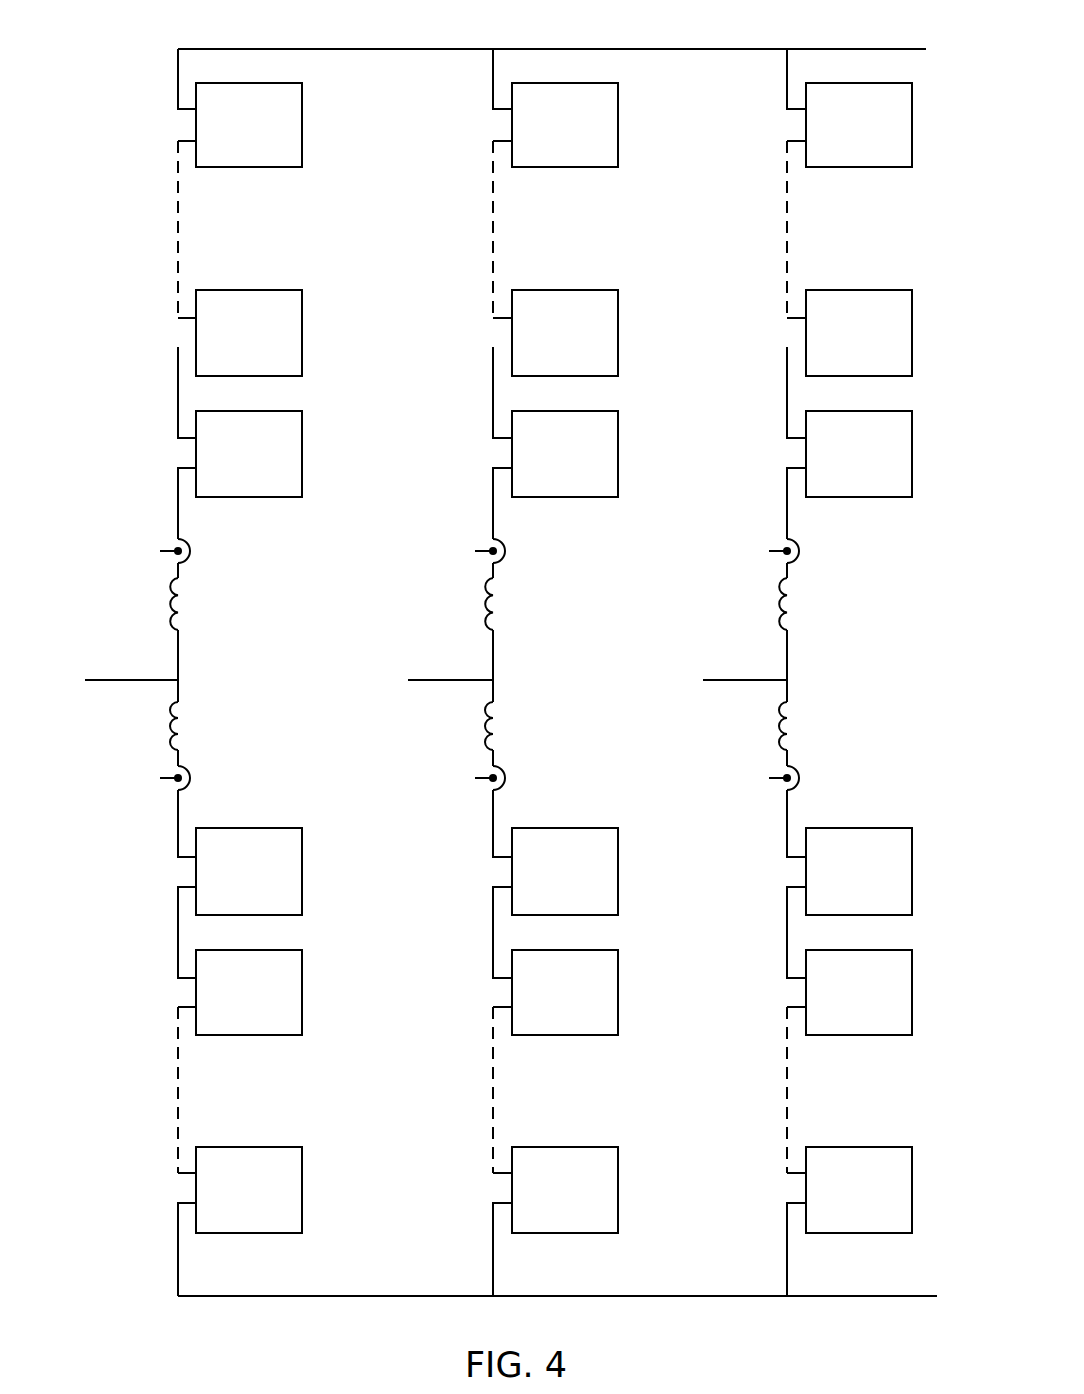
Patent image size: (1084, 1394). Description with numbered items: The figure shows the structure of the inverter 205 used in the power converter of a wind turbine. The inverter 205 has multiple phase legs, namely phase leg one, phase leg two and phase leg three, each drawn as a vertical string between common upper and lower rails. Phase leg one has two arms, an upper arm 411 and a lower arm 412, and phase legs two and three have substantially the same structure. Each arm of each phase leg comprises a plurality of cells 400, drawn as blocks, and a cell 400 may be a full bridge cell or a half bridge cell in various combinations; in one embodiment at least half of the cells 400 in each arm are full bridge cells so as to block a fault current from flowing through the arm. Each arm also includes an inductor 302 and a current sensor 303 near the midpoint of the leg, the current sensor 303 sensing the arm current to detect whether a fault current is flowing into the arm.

The inverter 205 is at (123, 82).
The cell 400 is at (249, 125).
The upper arm 411 is at (191, 294).
The lower arm 412 is at (190, 1043).
The inductor 302 is at (230, 612).
The current sensor 303 is at (230, 551).